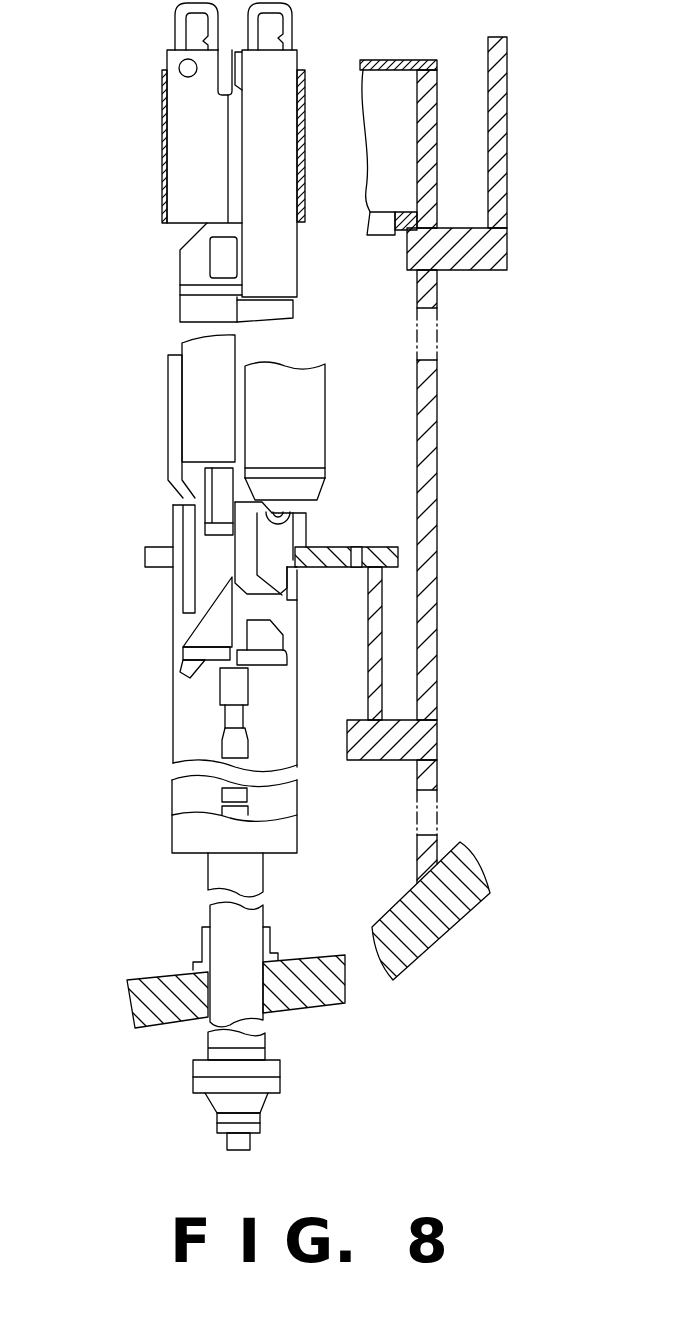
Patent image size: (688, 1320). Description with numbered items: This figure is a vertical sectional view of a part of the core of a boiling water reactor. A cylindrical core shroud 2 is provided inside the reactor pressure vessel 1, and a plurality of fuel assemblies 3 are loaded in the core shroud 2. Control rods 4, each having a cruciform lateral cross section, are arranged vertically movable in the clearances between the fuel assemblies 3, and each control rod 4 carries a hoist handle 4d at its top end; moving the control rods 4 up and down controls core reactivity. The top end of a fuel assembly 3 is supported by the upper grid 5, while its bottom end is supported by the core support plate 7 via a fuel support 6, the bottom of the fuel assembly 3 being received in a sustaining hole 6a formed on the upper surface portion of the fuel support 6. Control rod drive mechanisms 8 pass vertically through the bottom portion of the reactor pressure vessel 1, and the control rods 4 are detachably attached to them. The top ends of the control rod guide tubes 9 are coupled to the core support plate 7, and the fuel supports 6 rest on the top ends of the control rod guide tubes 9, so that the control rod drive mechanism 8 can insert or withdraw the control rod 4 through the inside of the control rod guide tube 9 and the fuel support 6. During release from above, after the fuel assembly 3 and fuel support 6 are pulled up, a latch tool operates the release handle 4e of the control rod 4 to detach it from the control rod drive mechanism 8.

The reactor pressure vessel 1 is at (463, 862).
The core shroud 2 is at (440, 452).
The fuel assembly 3 is at (185, 179).
The control rod 4 is at (188, 414).
The hoist handle 4d is at (182, 262).
The release handle 4e is at (220, 492).
The upper grid 5 is at (305, 105).
The fuel support 6 is at (300, 512).
The sustaining hole 6a is at (288, 592).
The core support plate 7 is at (328, 545).
The control rod drive mechanism 8 is at (250, 922).
The control rod guide tube 9 is at (173, 705).